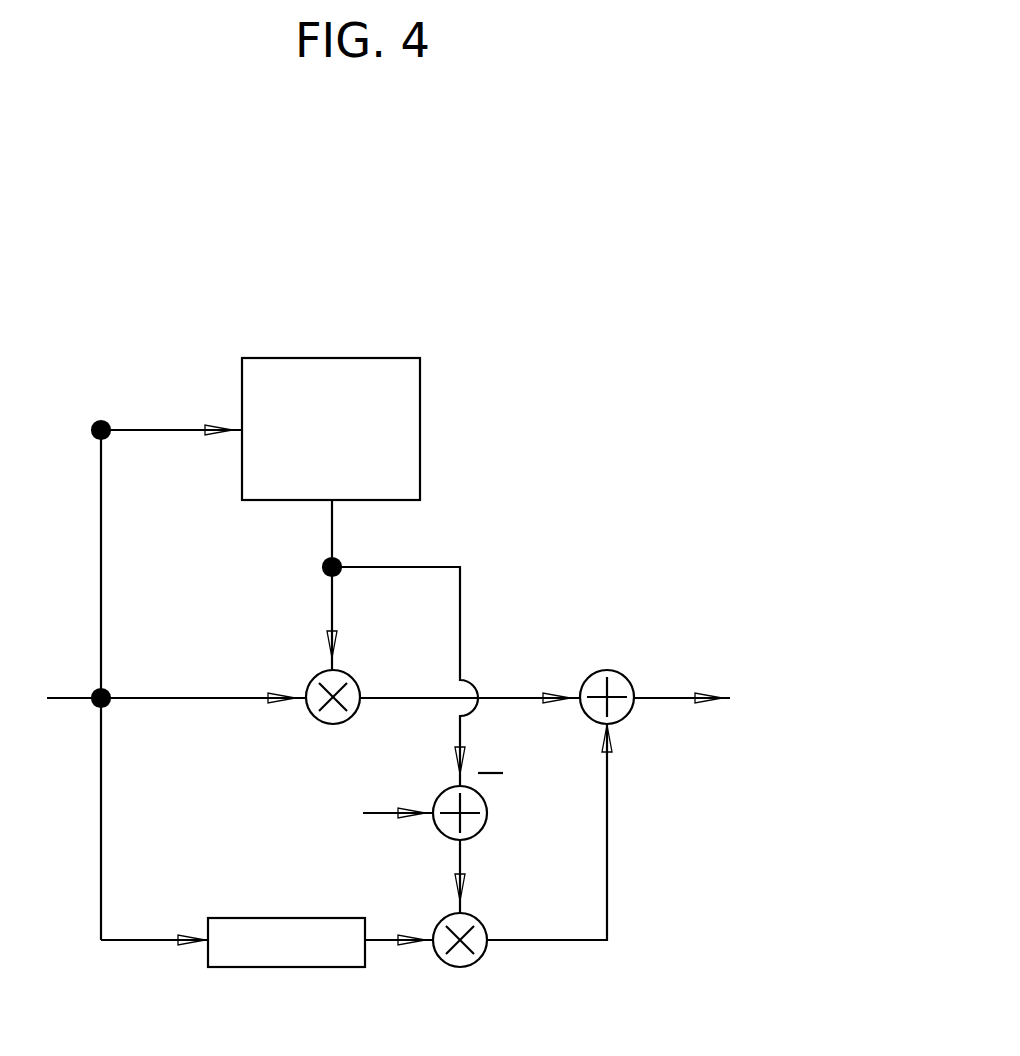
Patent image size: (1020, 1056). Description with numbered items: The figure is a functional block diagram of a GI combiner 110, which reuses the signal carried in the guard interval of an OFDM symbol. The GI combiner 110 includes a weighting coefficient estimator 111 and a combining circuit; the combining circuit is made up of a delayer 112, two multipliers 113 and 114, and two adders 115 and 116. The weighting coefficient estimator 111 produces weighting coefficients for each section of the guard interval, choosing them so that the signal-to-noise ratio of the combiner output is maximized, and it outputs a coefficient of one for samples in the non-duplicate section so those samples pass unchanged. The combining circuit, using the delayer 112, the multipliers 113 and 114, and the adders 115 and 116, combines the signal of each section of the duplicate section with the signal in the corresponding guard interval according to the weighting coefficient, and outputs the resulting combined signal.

The GI combiner 110 is at (630, 262).
The weighting coefficient estimator 111 is at (420, 405).
The delayer 112 is at (280, 917).
The multiplier 113 is at (306, 672).
The multiplier 114 is at (462, 968).
The adder 115 is at (488, 815).
The adder 116 is at (600, 668).